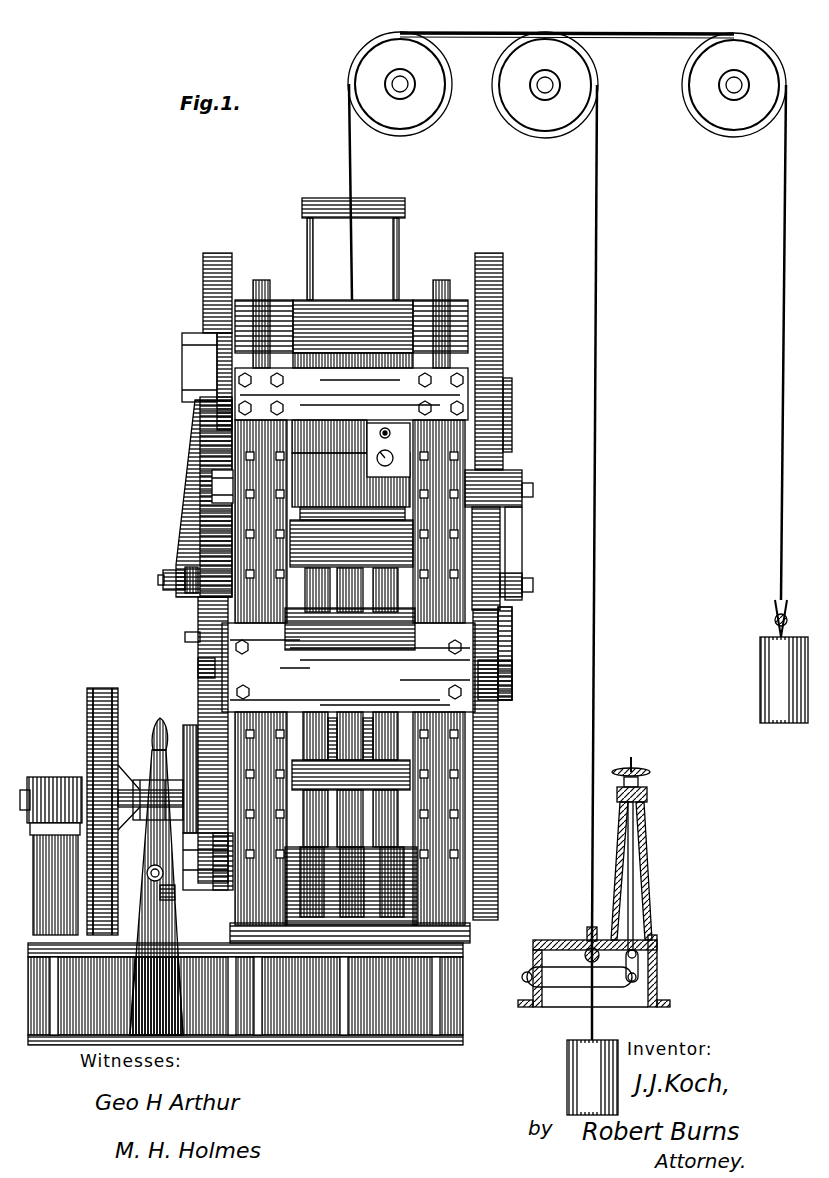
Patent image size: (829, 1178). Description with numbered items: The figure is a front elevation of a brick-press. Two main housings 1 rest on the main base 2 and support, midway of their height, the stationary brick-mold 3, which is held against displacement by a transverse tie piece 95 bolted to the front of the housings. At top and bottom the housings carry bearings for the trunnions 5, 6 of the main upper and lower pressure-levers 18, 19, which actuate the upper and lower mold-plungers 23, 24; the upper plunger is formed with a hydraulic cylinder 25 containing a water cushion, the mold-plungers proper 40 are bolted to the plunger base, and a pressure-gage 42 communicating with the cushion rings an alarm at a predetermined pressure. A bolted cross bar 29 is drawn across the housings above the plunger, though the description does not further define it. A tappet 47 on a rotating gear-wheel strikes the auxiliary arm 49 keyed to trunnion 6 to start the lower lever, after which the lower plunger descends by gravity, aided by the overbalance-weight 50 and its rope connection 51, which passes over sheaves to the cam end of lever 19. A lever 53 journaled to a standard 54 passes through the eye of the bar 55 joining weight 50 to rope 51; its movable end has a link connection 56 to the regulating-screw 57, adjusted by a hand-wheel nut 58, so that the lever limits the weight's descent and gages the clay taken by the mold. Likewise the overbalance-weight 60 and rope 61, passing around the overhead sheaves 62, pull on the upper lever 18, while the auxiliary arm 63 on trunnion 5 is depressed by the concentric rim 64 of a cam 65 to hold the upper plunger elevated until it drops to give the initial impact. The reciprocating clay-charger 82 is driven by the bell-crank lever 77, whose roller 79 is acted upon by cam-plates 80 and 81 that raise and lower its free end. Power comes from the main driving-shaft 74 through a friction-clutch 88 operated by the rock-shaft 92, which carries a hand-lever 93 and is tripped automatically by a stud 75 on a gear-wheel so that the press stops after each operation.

The main housings 1 is at (350, 672).
The main base 2 is at (249, 984).
The stationary brick-mold 3 is at (348, 667).
The trunnion 5 is at (182, 371).
The trunnion 6 is at (223, 861).
The main upper pressure-lever 18 is at (351, 334).
The main lower pressure-lever 19 is at (351, 886).
The upper mold-plunger 23 is at (351, 543).
The lower mold-plunger 24 is at (351, 778).
The hydraulic cylinder 25 is at (351, 470).
The bolted cross bar 29 is at (320, 404).
The mold-plungers proper 40 is at (345, 612).
The pressure-gage 42 is at (388, 450).
The stud or tappet 47 is at (185, 637).
The auxiliary arm 49 is at (186, 728).
The overbalance-weight 50 is at (592, 1077).
The wire rope or chain connection 51 is at (307, 242).
The lever 53 is at (577, 983).
The frame or standard 54 is at (553, 940).
The bar 55 is at (612, 1012).
The link connection 56 is at (640, 964).
The regulating-screw 57 is at (645, 900).
The hand-wheel nut 58 is at (650, 772).
The overbalance-weight 60 is at (760, 680).
The chain or rope connection 61 is at (350, 160).
The overhead sheaves 62 is at (734, 85).
The auxiliary arm 63 is at (176, 462).
The concentric rim portion 64 is at (175, 568).
The cam 65 is at (191, 580).
The main driving-shaft 74 is at (75, 780).
The stud or tappet 75 is at (170, 900).
The bell-crank lever 77 is at (522, 543).
The friction-reducing roller 79 is at (522, 578).
The cam-plate 80 is at (512, 415).
The cam-plate 81 is at (512, 654).
The reciprocating clay-charger 82 is at (350, 629).
The friction-clutch 88 is at (102, 811).
The rock-shaft 92 is at (147, 874).
The hand-lever 93 is at (156, 727).
The transverse tie or frame piece 95 is at (438, 650).